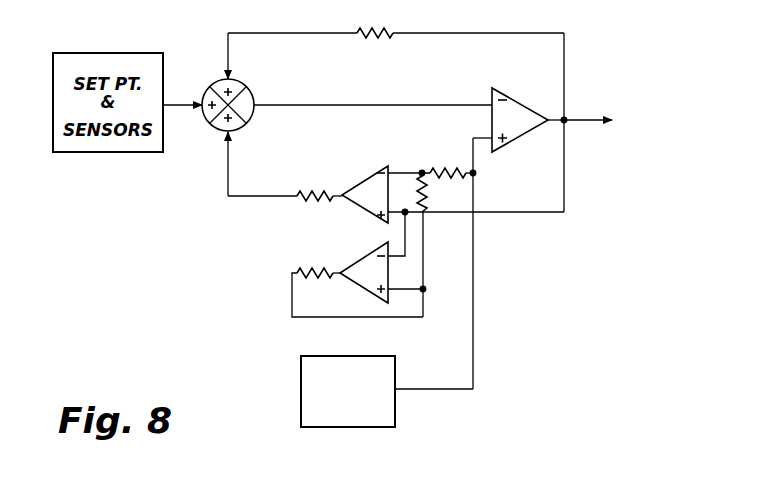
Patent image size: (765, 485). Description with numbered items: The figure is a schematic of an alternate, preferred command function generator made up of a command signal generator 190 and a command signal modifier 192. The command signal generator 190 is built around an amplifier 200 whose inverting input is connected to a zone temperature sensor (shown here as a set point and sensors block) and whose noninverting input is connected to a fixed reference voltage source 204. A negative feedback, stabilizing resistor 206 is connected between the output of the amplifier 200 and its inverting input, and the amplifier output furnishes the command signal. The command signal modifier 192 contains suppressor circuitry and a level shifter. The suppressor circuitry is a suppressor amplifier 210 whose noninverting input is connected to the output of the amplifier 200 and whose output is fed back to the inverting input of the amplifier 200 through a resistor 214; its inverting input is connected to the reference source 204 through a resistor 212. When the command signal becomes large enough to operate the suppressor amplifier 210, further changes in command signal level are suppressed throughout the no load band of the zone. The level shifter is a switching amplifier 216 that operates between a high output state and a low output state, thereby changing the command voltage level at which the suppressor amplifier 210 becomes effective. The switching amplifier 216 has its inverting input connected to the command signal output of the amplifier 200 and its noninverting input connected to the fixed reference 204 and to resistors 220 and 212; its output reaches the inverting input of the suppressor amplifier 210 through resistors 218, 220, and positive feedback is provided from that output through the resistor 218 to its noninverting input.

The command signal generator 190 is at (572, 89).
The command signal modifier 192 is at (488, 223).
The amplifier 200 is at (505, 90).
The fixed reference voltage source 204 is at (346, 430).
The negative feedback stabilizing resistor 206 is at (371, 41).
The suppressor amplifier 210 is at (360, 182).
The resistor 212 is at (438, 170).
The resistor 214 is at (300, 192).
The switching amplifier 216 is at (367, 259).
The resistor 218 is at (305, 270).
The resistor 220 is at (426, 189).